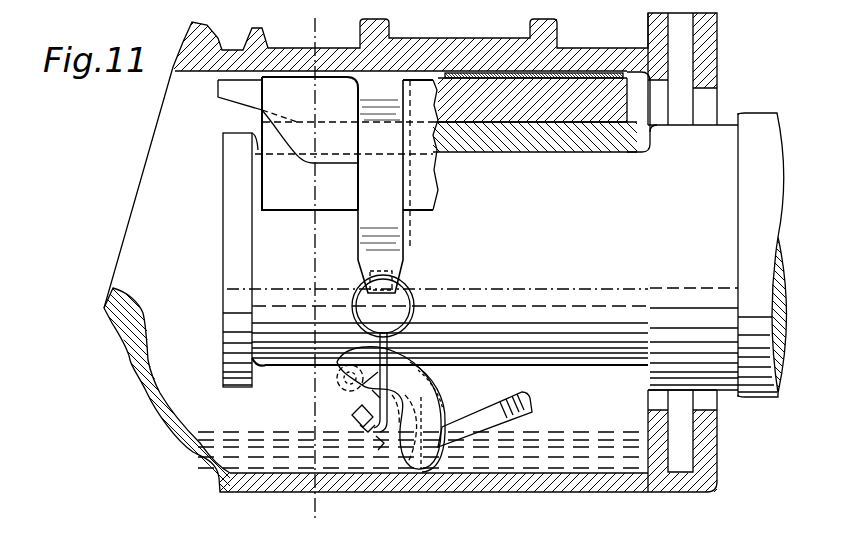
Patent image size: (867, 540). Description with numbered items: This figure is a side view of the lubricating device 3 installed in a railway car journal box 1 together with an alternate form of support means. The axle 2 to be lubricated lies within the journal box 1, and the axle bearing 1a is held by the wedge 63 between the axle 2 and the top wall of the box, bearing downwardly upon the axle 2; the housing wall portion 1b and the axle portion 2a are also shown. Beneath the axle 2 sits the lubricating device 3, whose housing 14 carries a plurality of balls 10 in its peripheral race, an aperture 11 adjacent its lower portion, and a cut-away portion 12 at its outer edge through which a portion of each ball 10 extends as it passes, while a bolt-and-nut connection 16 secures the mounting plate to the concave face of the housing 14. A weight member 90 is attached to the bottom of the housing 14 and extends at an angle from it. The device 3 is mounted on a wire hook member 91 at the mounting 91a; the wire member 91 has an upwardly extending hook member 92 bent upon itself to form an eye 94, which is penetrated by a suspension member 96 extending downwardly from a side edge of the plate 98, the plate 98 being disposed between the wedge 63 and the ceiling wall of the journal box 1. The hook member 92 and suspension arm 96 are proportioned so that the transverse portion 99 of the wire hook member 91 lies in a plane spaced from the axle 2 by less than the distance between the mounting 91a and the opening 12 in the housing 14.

The journal box 1 is at (422, 44).
The axle bearing 1a is at (588, 143).
The curved housing wall 1b is at (130, 352).
The axle 2 is at (588, 346).
The cylinder flange 2a is at (228, 262).
The lubricating device 3 is at (443, 381).
The balls 10 is at (337, 381).
The aperture 11 is at (421, 468).
The cut-away portion 12 is at (331, 26).
The housing 14 is at (453, 396).
The bolt-and-nut connection 16 is at (447, 393).
The wedge 63 is at (580, 80).
The weight member 90 is at (508, 398).
The wire hook member 91 is at (365, 340).
The mounting 91a is at (358, 430).
The hook member 92 is at (380, 373).
The eye 94 is at (409, 287).
The suspension member 96 is at (401, 238).
The plate 98 is at (490, 73).
The transverse portion 99 is at (383, 445).